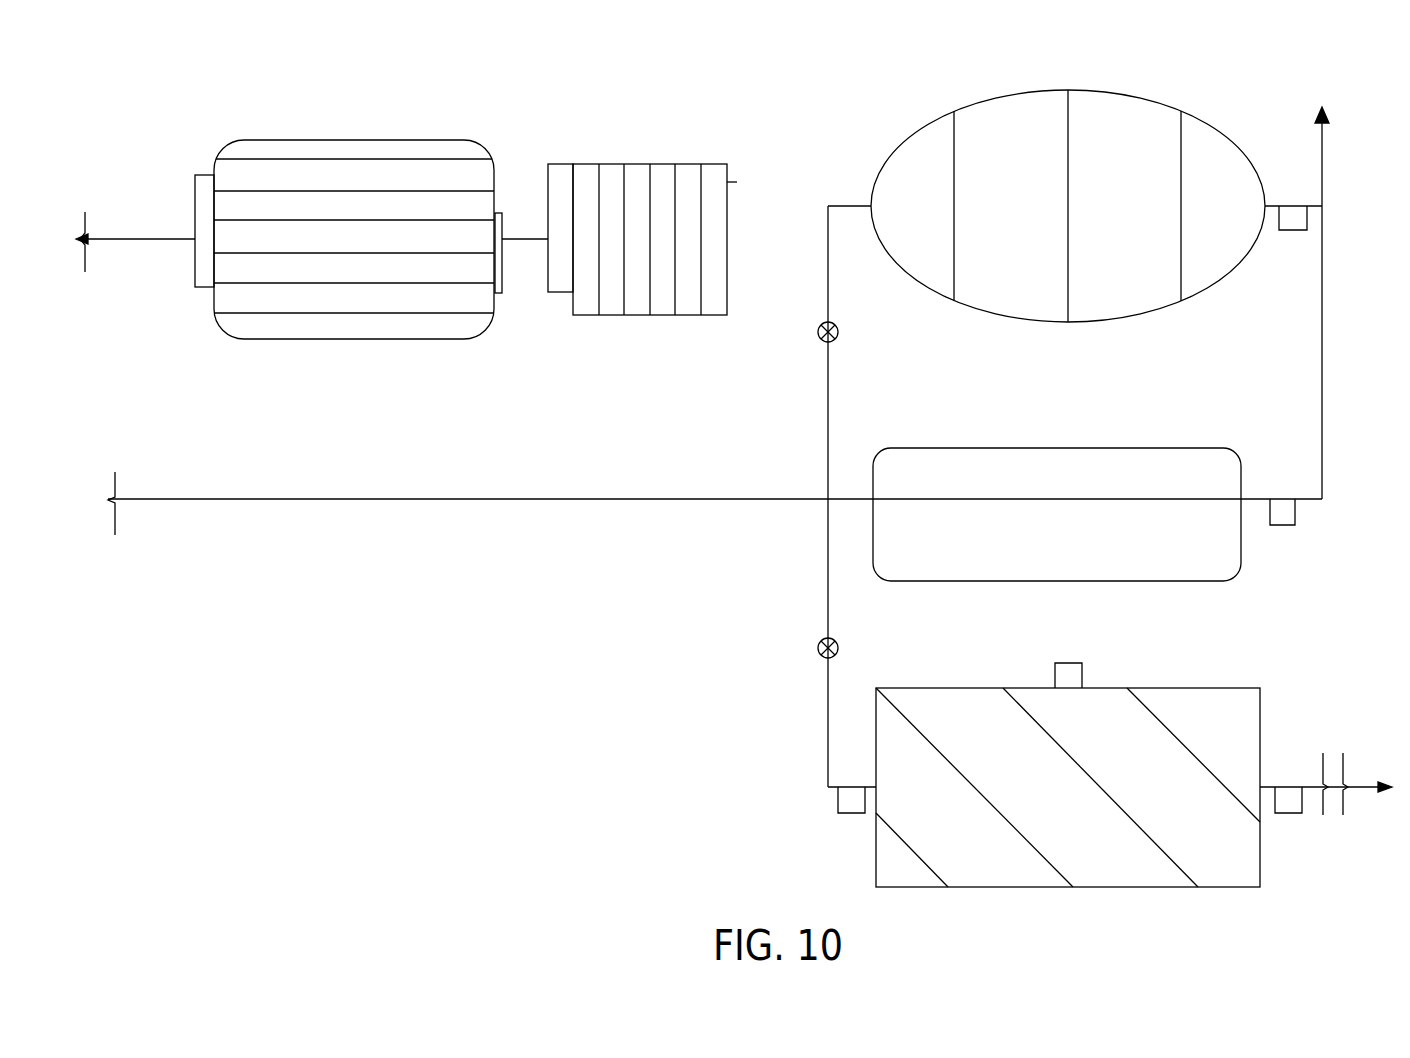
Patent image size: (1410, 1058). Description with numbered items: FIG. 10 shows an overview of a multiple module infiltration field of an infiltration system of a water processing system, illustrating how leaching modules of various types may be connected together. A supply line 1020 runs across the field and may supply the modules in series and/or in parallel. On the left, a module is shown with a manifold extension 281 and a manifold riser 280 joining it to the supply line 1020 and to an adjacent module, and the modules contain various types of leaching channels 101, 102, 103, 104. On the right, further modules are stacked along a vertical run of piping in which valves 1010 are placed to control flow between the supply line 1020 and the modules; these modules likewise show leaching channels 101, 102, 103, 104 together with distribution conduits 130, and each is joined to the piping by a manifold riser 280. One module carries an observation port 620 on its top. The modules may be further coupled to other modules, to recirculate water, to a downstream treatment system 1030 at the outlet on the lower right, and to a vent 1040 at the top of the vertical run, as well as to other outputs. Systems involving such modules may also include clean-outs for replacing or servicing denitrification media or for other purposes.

The leaching channel 101 is at (370, 190).
The leaching channel 102 is at (308, 284).
The leaching channel 103 is at (417, 339).
The leaching channel 104 is at (342, 313).
The distribution conduit 130 is at (1006, 92).
The manifold riser 280 is at (195, 239).
The manifold extension 281 is at (195, 182).
The observation port 620 is at (1082, 675).
The valve 1010 is at (838, 331).
The supply line 1020 is at (208, 499).
The downstream treatment system 1030 is at (1360, 783).
The vent 1040 is at (1324, 108).